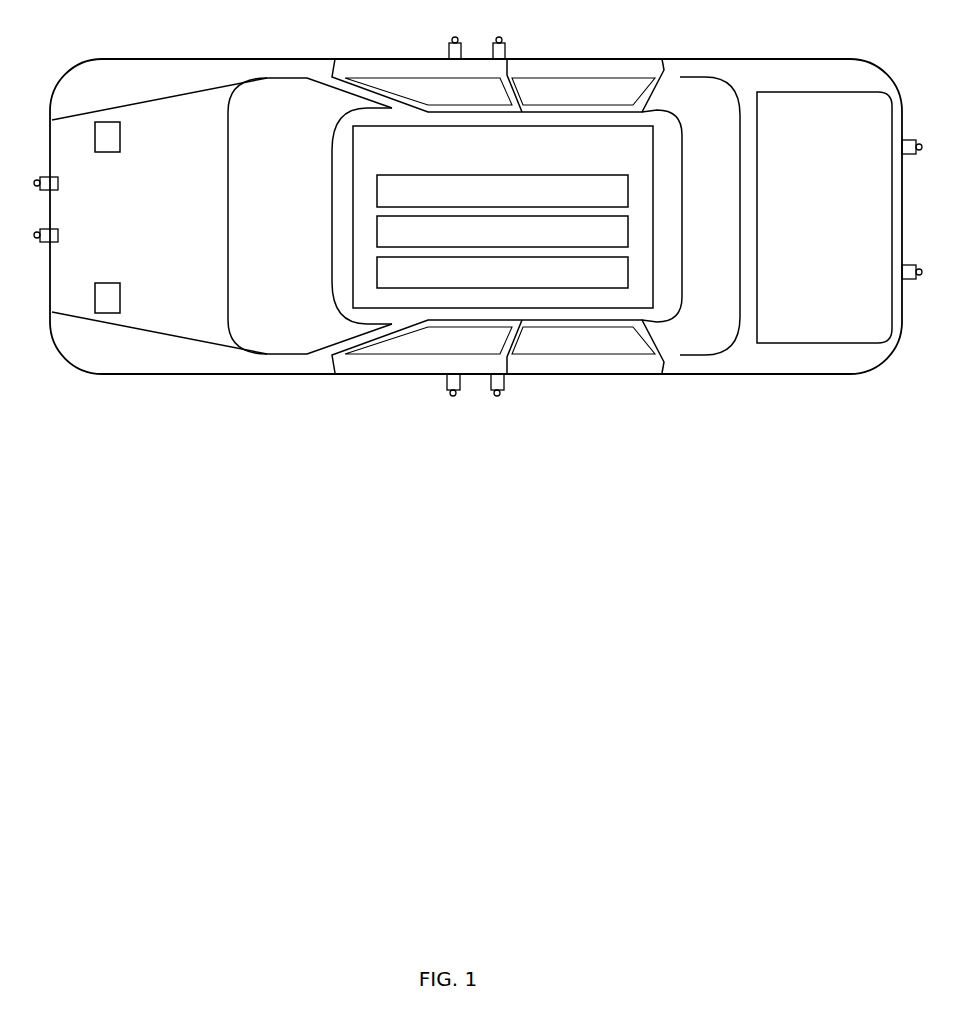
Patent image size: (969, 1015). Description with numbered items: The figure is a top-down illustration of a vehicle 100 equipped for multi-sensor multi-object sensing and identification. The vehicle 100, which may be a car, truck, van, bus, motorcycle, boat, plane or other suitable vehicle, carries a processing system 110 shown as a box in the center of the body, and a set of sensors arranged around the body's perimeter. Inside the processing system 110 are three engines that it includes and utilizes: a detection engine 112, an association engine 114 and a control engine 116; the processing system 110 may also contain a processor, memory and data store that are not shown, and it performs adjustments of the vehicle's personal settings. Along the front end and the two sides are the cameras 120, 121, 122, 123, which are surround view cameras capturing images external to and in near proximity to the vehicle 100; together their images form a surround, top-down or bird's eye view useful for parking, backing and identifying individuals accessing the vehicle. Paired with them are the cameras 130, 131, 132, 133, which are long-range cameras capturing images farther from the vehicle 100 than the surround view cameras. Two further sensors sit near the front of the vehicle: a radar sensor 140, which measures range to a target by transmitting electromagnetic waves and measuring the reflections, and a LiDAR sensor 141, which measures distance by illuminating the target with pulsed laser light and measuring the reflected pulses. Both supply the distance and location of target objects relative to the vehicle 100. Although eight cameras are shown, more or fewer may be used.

The vehicle 100 is at (152, 59).
The processing system 110 is at (503, 217).
The detection engine 112 is at (502, 191).
The association engine 114 is at (502, 231).
The control engine 116 is at (502, 272).
The camera 120 is at (45, 176).
The camera 121 is at (455, 397).
The camera 122 is at (454, 37).
The camera 123 is at (919, 156).
The camera 130 is at (42, 228).
The camera 131 is at (499, 397).
The camera 132 is at (498, 37).
The camera 133 is at (920, 281).
The radar sensor 140 is at (100, 121).
The LiDAR sensor 141 is at (100, 282).